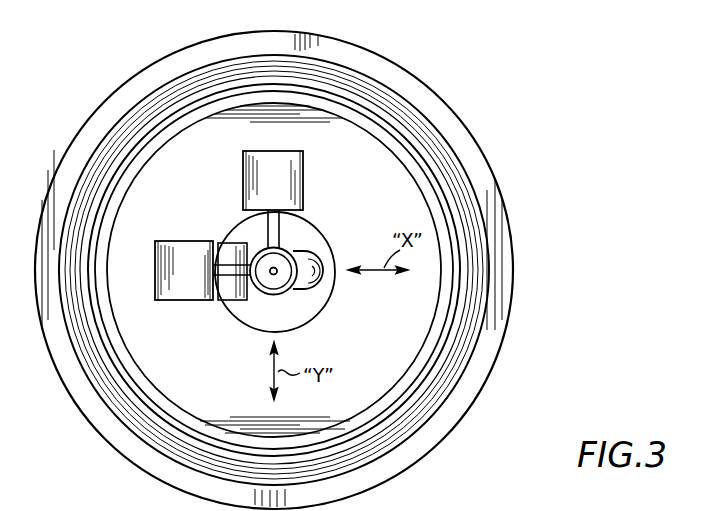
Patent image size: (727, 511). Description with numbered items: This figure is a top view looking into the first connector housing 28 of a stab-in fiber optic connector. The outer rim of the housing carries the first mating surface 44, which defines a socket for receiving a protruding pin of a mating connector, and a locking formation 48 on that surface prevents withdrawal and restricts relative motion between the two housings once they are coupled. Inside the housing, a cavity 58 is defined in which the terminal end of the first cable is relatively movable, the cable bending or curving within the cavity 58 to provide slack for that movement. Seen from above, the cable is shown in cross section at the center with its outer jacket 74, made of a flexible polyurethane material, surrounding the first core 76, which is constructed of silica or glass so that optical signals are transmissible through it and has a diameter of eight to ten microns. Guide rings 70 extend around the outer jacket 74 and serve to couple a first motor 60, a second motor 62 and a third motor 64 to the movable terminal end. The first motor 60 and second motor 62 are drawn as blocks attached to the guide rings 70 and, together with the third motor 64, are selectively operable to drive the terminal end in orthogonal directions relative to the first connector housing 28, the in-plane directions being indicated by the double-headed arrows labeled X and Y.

The first connector housing 28 is at (450, 102).
The first mating surface 44 is at (453, 170).
The locking formation 48 is at (445, 204).
The cavity 58 is at (320, 312).
The first motor 60 is at (181, 241).
The second motor 62 is at (303, 167).
The third motor 64 is at (237, 300).
The guide rings 70 is at (290, 253).
The outer jacket 74 is at (276, 268).
The first core 76 is at (271, 277).